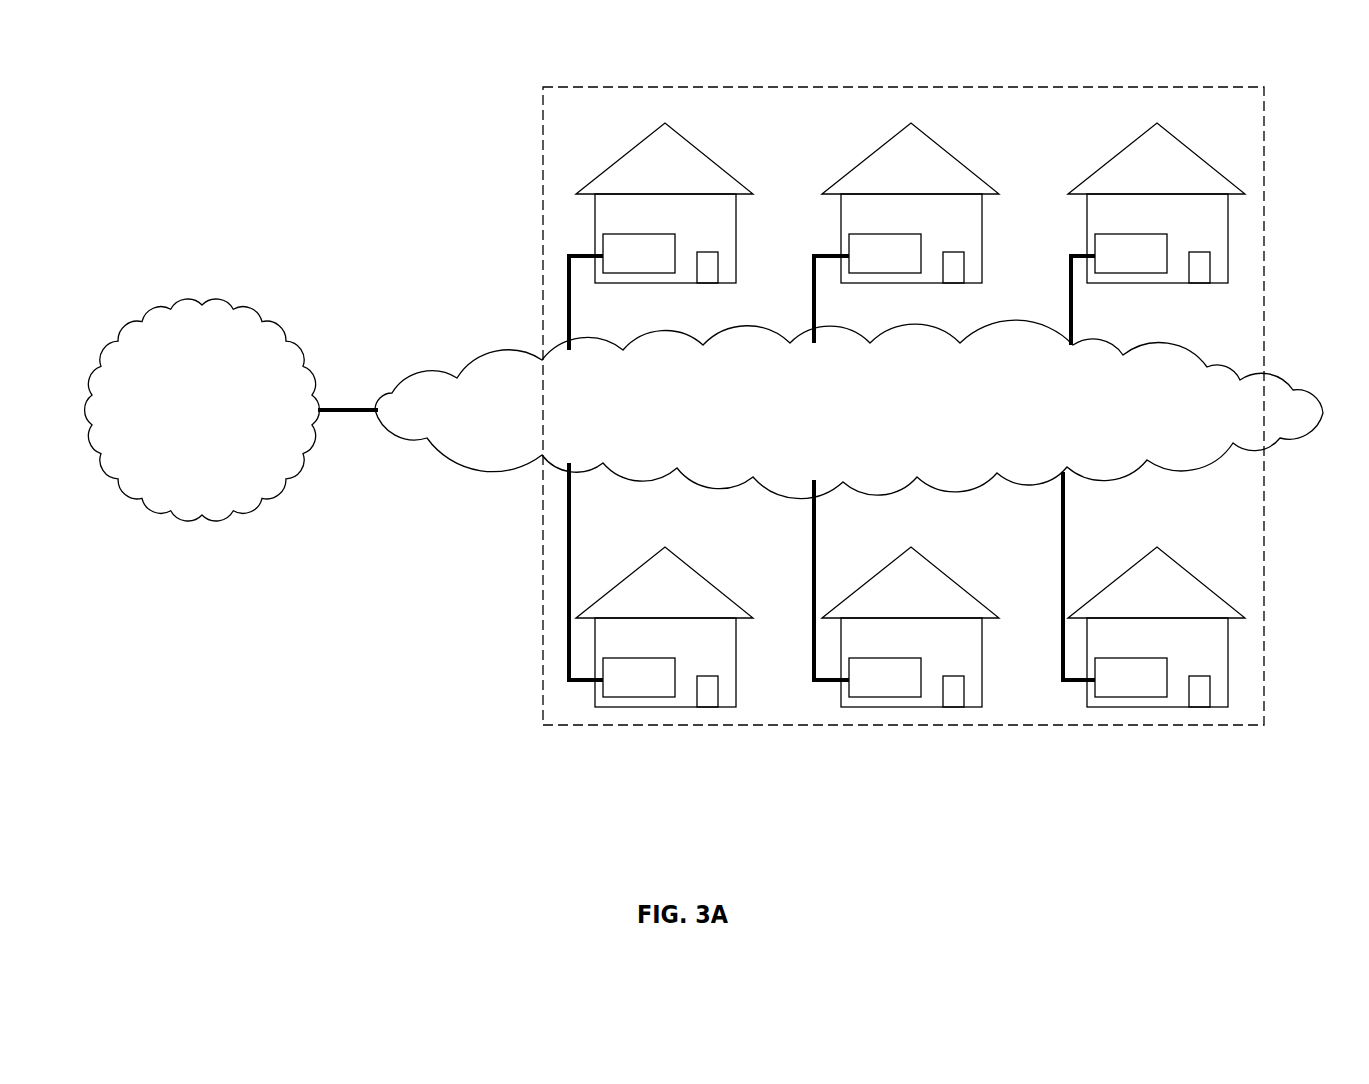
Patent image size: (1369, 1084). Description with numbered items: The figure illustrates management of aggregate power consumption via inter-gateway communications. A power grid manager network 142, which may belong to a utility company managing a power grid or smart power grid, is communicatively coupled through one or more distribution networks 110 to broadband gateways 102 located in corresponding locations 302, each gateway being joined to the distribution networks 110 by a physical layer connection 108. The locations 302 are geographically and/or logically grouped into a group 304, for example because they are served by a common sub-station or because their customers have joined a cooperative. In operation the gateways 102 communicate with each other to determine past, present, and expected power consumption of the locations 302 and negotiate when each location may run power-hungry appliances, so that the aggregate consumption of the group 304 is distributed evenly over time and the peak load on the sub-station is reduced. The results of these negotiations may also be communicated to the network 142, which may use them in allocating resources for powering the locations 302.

The group 304 is at (543, 212).
The network 142 is at (187, 430).
The distribution network 110 is at (832, 443).
The location 302 is at (687, 223).
The broadband gateway 102 is at (885, 465).
The physical layer connection 108 is at (571, 331).